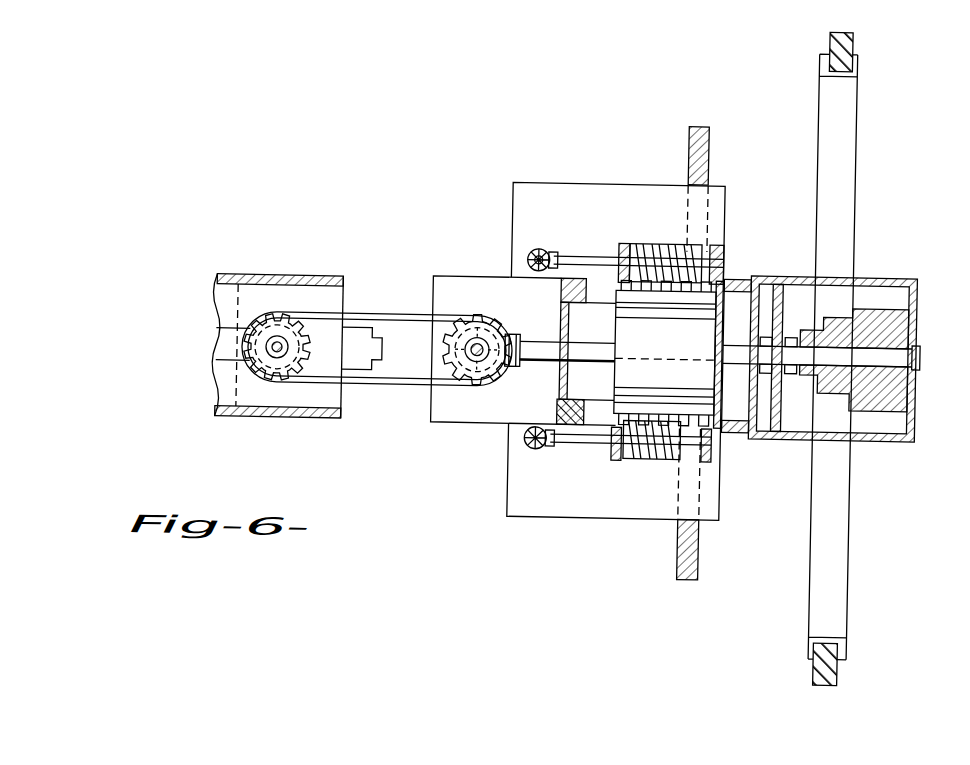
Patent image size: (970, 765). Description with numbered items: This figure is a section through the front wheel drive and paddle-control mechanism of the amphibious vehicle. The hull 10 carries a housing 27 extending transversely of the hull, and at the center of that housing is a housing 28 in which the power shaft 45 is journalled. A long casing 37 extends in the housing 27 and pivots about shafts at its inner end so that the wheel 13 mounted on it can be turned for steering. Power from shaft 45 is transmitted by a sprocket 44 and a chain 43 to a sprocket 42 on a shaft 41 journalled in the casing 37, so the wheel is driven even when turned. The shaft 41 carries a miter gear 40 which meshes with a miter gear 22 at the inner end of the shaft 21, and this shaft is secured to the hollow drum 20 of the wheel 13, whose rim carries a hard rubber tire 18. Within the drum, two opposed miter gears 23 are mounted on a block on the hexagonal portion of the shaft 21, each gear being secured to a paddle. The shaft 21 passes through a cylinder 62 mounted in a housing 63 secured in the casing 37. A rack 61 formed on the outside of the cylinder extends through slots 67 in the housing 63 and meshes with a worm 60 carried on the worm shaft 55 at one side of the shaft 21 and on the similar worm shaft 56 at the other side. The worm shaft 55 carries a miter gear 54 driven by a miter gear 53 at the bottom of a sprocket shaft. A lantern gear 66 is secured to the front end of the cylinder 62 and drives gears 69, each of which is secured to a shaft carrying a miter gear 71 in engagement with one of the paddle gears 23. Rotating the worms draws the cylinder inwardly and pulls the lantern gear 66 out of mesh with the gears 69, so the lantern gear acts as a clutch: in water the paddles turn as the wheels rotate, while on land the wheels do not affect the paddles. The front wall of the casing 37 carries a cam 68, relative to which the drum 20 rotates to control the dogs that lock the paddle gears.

The hull 10 is at (689, 151).
The wheel 13 is at (855, 159).
The hard rubber tire 18 is at (852, 43).
The hollow drum 20 is at (893, 273).
The shaft 21 is at (905, 343).
The miter gear 22 is at (500, 338).
The miter gear 23 is at (905, 393).
The housing 27 is at (512, 507).
The housing 28 is at (216, 405).
The casing 37 is at (406, 330).
The miter gear 40 is at (462, 322).
The shaft 41 is at (478, 380).
The sprocket 42 is at (448, 367).
The chain 43 is at (374, 318).
The sprocket 44 is at (243, 355).
The shaft 45 is at (270, 345).
The miter gear 53 is at (527, 256).
The miter gear 54 is at (536, 256).
The worm shaft 55 is at (558, 258).
The worm shaft 56 is at (582, 452).
The worm 60 is at (642, 246).
The rack 61 is at (724, 280).
The cylinder 62 is at (612, 348).
The housing 63 is at (560, 292).
The lantern gear 66 is at (756, 386).
The slot 67 is at (590, 297).
The cam 68 is at (727, 277).
The gear 69 is at (712, 338).
The miter gear 71 is at (825, 332).